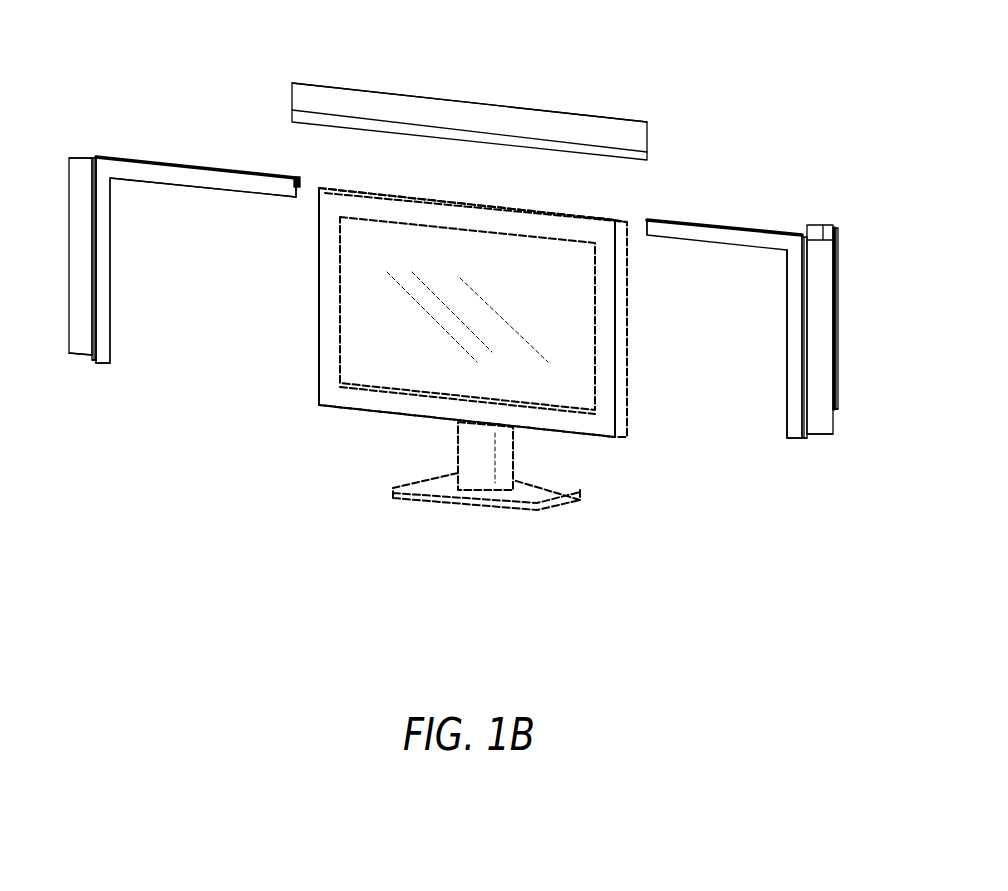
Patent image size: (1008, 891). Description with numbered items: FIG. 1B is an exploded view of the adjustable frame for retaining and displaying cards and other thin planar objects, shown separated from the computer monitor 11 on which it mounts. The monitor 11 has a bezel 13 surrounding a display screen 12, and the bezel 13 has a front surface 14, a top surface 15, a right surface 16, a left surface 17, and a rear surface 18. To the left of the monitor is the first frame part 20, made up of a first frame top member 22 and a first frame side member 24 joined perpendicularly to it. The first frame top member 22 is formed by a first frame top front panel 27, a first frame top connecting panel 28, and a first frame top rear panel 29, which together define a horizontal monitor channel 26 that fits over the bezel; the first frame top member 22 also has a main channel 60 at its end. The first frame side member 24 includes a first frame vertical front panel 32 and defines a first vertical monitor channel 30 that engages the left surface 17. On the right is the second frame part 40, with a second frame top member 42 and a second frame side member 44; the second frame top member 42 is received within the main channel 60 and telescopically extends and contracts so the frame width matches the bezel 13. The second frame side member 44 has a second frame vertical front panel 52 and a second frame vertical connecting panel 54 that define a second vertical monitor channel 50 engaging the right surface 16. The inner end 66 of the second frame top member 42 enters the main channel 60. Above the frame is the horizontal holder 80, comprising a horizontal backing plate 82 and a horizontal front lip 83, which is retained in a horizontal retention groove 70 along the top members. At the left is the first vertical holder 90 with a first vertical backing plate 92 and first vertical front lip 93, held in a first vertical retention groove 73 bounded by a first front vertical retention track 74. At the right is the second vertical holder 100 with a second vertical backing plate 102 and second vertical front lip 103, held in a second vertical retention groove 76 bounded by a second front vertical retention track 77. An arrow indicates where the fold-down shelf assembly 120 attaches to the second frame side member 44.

The computer monitor 11 is at (618, 488).
The display screen 12 is at (377, 373).
The bezel 13 is at (626, 437).
The front surface 14 is at (587, 228).
The top surface 15 is at (604, 218).
The right surface 16 is at (620, 402).
The left surface 17 is at (320, 357).
The rear surface 18 is at (630, 221).
The first frame part 20 is at (96, 158).
The first frame top member 22 is at (187, 167).
The first frame side member 24 is at (113, 343).
The horizontal monitor channel 26 is at (296, 196).
The first frame top front panel 27 is at (240, 178).
The first frame top connecting panel 28 is at (296, 178).
The first frame top rear panel 29 is at (300, 187).
The first vertical monitor channel 30 is at (113, 270).
The first frame vertical front panel 32 is at (105, 297).
The second frame part 40 is at (790, 235).
The second frame top member 42 is at (744, 226).
The second frame side member 44 is at (790, 393).
The second vertical monitor channel 50 is at (787, 308).
The second frame vertical front panel 52 is at (794, 335).
The second frame vertical connecting panel 54 is at (806, 438).
The main channel 60 is at (300, 181).
The inner end of right top arm 66 is at (647, 235).
The horizontal retention groove 70 is at (698, 223).
The first vertical retention groove 73 is at (90, 356).
The first front vertical retention track 74 is at (93, 362).
The second vertical retention groove 76 is at (804, 436).
The second front vertical retention track 77 is at (809, 409).
The horizontal holder 80 is at (292, 83).
The horizontal backing plate 82 is at (347, 97).
The horizontal front lip 83 is at (357, 125).
The first vertical holder 90 is at (70, 158).
The first vertical backing plate 92 is at (77, 178).
The first vertical front lip 93 is at (92, 213).
The second vertical holder 100 is at (835, 226).
The second vertical backing plate 102 is at (825, 288).
The second vertical front lip 103 is at (806, 317).
The fold-down shelf assembly 120 is at (826, 165).